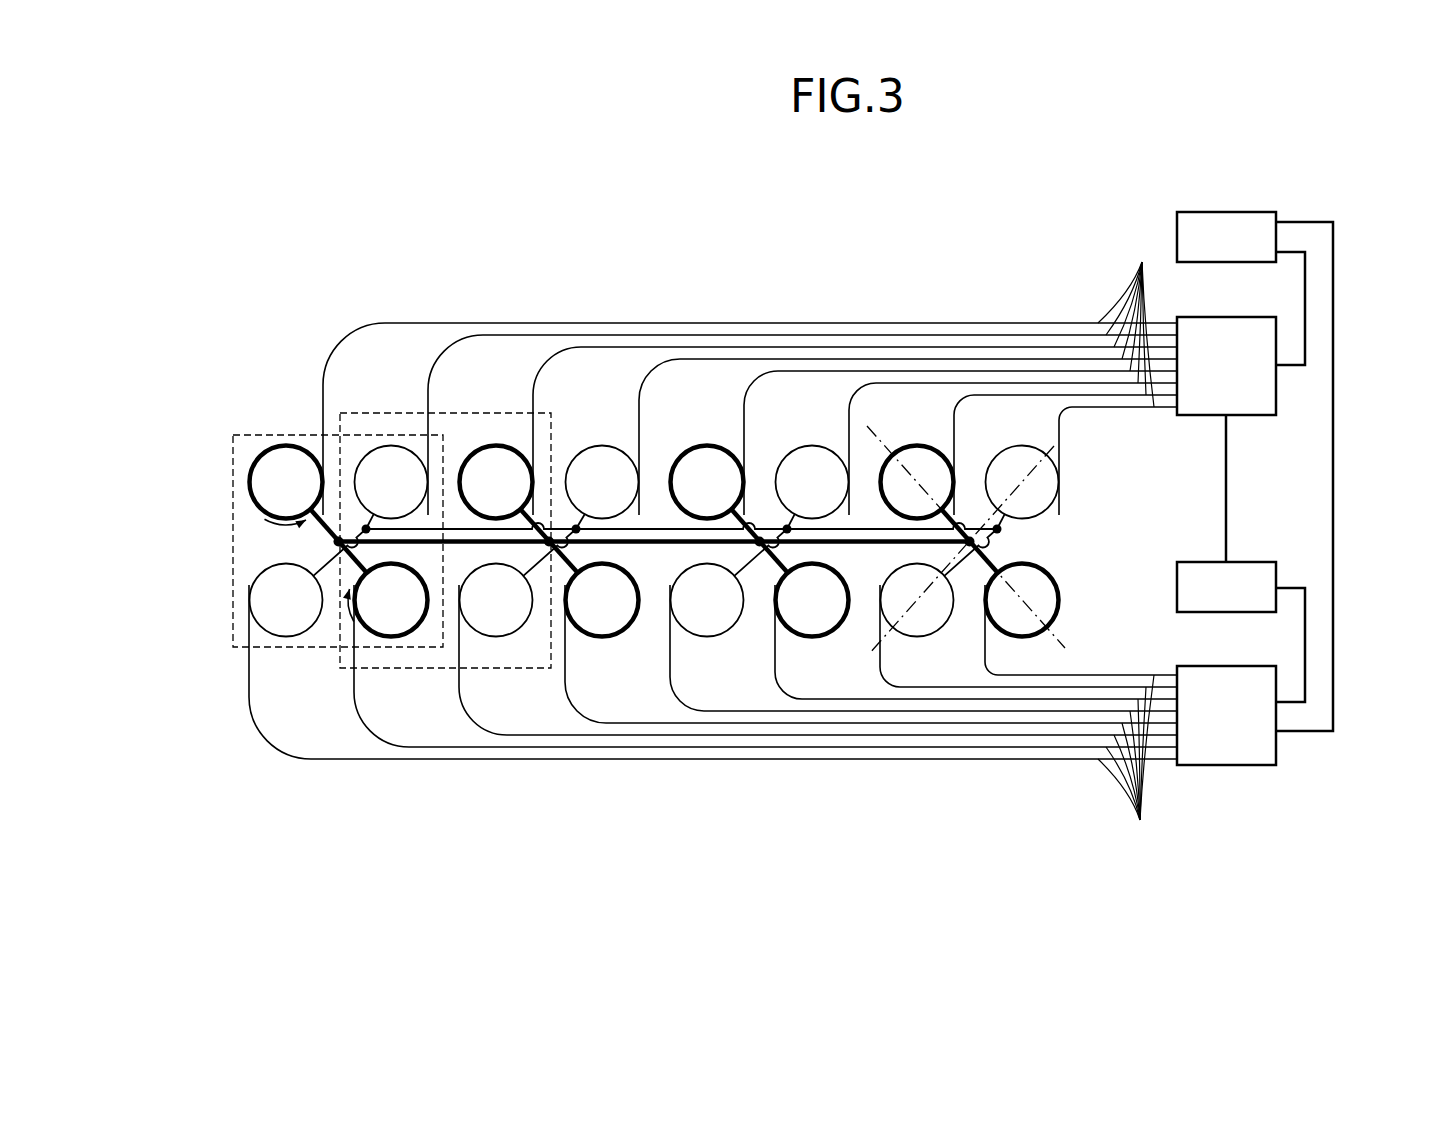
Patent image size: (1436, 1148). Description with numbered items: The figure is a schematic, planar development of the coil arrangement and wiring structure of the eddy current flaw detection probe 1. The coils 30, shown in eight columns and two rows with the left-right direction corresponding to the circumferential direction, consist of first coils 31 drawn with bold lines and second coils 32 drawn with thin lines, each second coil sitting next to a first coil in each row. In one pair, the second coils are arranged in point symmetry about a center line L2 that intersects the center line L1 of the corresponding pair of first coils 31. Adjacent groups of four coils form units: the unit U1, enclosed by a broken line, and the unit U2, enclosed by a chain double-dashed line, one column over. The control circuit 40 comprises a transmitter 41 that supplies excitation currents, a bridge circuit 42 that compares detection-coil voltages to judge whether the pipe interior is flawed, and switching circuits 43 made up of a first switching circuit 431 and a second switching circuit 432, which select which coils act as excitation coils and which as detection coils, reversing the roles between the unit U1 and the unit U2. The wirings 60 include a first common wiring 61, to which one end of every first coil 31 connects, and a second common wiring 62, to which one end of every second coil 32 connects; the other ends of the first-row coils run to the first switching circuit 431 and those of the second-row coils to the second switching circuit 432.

The eddy current flaw detection probe 1 is at (1291, 153).
The coils 30 is at (664, 547).
The first coils 31 is at (286, 445).
The second coils 32 is at (391, 445).
The control circuit 40 is at (1360, 270).
The transmitter 41 is at (1257, 213).
The bridge circuit 42 is at (1257, 563).
The switching circuits 43 is at (1233, 526).
The first switching circuit 431 is at (1194, 318).
The second switching circuit 432 is at (1194, 667).
The wirings 60 is at (734, 545).
The first common wiring 61 is at (660, 543).
The second common wiring 62 is at (660, 529).
The unit U1 is at (233, 593).
The unit U2 is at (423, 670).
The center line L1 is at (1066, 650).
The center line L2 is at (1066, 431).